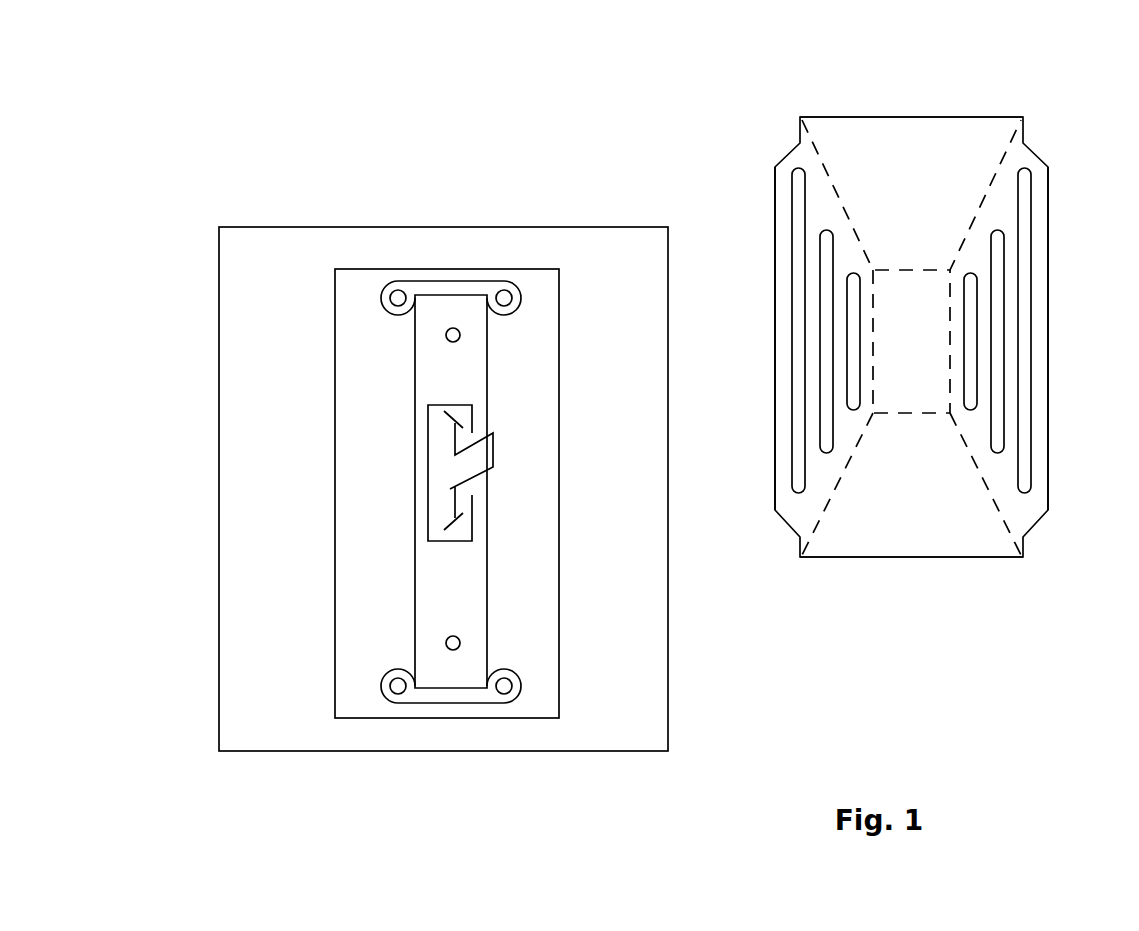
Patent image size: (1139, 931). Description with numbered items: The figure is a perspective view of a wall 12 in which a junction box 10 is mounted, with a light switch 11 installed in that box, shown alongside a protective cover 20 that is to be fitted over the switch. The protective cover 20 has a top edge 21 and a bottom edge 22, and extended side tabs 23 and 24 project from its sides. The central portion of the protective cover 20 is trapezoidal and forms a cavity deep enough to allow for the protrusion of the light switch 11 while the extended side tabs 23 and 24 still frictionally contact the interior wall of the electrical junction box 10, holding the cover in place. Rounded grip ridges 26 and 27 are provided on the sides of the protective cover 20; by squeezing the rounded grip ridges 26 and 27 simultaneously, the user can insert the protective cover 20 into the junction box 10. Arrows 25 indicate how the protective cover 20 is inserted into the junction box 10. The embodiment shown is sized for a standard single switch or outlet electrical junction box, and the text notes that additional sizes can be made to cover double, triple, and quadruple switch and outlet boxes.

The junction box 10 is at (410, 267).
The light switch 11 is at (447, 484).
The wall 12 is at (273, 373).
The protective cover 20 is at (957, 105).
The top edge 21 is at (892, 110).
The bottom edge 22 is at (897, 560).
The extended side tab 23 is at (810, 167).
The extended side tab 24 is at (1055, 540).
The arrows 25 is at (538, 215).
The rounded grip ridge 26 is at (785, 320).
The rounded grip ridge 27 is at (1035, 397).